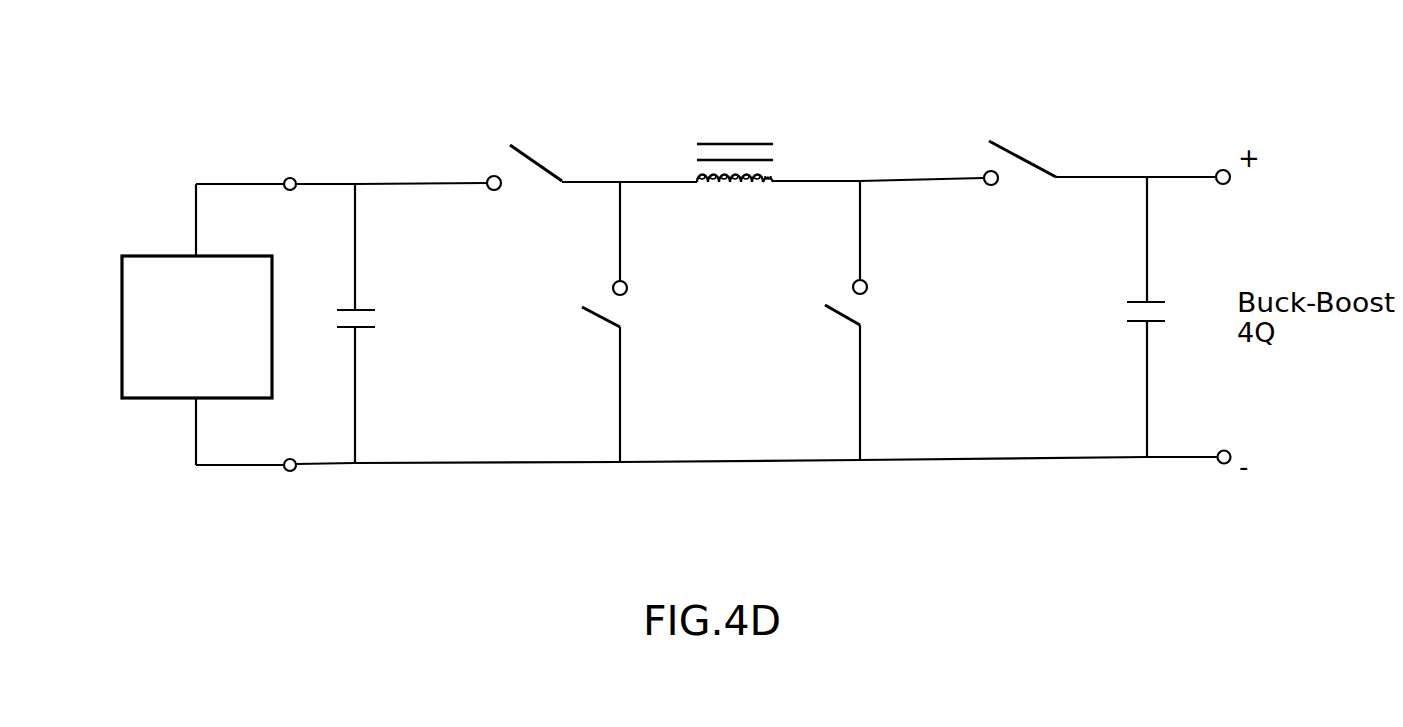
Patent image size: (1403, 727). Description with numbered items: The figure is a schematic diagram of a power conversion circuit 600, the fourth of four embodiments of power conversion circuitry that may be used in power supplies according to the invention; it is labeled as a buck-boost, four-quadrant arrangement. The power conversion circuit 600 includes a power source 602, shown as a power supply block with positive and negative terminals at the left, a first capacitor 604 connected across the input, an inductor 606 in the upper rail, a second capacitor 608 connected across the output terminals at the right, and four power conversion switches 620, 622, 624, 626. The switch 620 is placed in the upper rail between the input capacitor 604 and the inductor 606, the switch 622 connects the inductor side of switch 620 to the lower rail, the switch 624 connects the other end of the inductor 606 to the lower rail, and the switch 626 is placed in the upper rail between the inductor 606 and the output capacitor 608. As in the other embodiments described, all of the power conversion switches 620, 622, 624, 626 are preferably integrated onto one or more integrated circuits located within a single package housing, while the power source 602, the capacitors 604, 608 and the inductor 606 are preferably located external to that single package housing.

The power conversion circuit 600 is at (560, 523).
The power source 602 is at (153, 256).
The capacitor 604 is at (365, 303).
The inductor 606 is at (775, 132).
The capacitor 608 is at (1132, 332).
The power conversion switch 620 is at (498, 158).
The power conversion switch 622 is at (577, 295).
The power conversion switch 624 is at (832, 327).
The power conversion switch 626 is at (1017, 143).